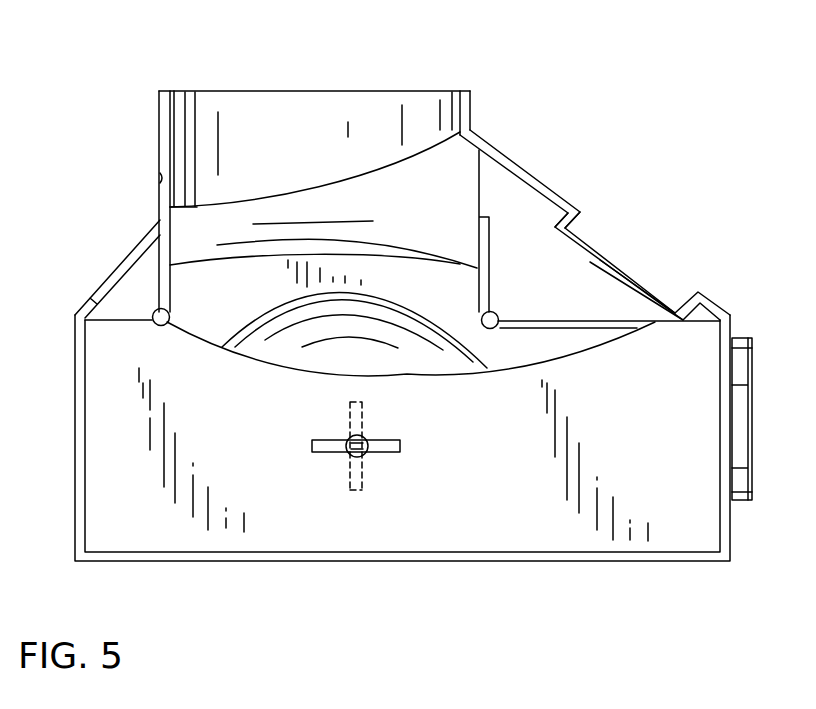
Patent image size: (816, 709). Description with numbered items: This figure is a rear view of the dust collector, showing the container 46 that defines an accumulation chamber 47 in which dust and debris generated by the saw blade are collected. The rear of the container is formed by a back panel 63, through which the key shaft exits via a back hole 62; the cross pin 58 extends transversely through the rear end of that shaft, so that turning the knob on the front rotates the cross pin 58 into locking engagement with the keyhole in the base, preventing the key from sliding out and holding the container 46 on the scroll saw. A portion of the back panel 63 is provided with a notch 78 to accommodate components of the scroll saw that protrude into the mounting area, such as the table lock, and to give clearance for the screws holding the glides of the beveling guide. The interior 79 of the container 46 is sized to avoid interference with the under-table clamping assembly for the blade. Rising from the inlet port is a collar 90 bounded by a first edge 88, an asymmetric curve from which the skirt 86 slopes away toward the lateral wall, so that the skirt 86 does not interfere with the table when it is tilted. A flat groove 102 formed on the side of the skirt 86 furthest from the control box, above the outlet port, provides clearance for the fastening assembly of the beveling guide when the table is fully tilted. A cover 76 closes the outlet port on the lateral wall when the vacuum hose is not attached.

The container 46 is at (555, 167).
The accumulation chamber 47 is at (202, 287).
The cross pin 58 is at (387, 452).
The back hole 62 is at (345, 455).
The back panel 63 is at (122, 432).
The cover 76 is at (747, 503).
The notch 78 is at (510, 370).
The interior 79 is at (413, 273).
The skirt 86 is at (550, 183).
The first edge 88 is at (378, 170).
The collar 90 is at (225, 142).
The flat groove 102 is at (623, 268).